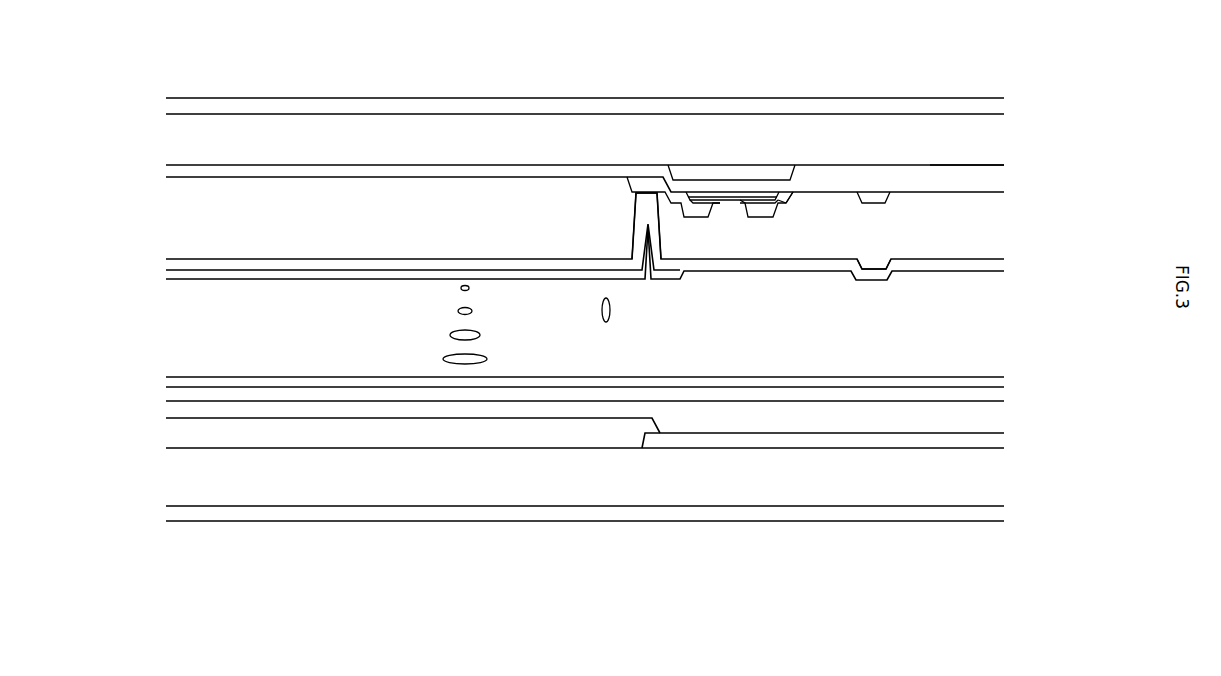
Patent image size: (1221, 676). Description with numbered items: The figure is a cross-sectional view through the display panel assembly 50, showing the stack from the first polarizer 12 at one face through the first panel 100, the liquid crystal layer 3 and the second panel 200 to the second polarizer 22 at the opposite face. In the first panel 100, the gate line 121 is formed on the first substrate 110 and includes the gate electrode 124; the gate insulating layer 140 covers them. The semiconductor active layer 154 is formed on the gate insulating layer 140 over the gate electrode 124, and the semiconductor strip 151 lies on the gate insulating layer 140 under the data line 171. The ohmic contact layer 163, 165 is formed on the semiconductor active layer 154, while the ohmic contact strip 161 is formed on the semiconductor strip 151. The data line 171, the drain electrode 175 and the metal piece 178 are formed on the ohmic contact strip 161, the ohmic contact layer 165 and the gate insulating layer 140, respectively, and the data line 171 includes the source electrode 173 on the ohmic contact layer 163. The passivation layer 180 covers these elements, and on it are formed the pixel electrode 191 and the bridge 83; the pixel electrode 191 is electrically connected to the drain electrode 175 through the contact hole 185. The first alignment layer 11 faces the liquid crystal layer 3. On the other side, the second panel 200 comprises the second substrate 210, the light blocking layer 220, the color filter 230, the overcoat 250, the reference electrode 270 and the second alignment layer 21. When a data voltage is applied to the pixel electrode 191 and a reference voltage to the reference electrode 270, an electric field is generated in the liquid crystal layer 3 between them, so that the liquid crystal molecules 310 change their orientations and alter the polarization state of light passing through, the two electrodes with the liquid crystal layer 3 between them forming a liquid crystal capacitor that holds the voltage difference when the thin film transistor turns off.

The liquid crystal layer 3 is at (1008, 368).
The first alignment layer 11 is at (965, 273).
The first polarizer 12 is at (1000, 99).
The second alignment layer 21 is at (966, 378).
The second polarizer 22 is at (1000, 519).
The display panel assembly 50 is at (1073, 412).
The bridge 83 is at (876, 261).
The first panel 100 is at (1008, 273).
The first substrate 110 is at (343, 137).
The gate line 121 is at (945, 167).
The gate electrode 124 is at (714, 188).
The gate insulating layer 140 is at (417, 172).
The semiconductor strip 151 is at (766, 195).
The semiconductor active layer 154 is at (740, 196).
The ohmic contact strip 161 is at (780, 200).
The ohmic contact layer 163 is at (752, 200).
The ohmic contact layer 165 is at (700, 182).
The data line 171 is at (790, 200).
The source electrode 173 is at (757, 217).
The drain electrode 175 is at (650, 176).
The metal piece 178 is at (865, 192).
The passivation layer 180 is at (497, 212).
The contact hole 185 is at (648, 265).
The pixel electrode 191 is at (536, 271).
The second panel 200 is at (1008, 510).
The second substrate 210 is at (541, 495).
The light blocking layer 220 is at (751, 440).
The color filter 230 is at (351, 440).
The overcoat 250 is at (439, 417).
The reference electrode 270 is at (278, 395).
The liquid crystal molecules 310 is at (450, 335).